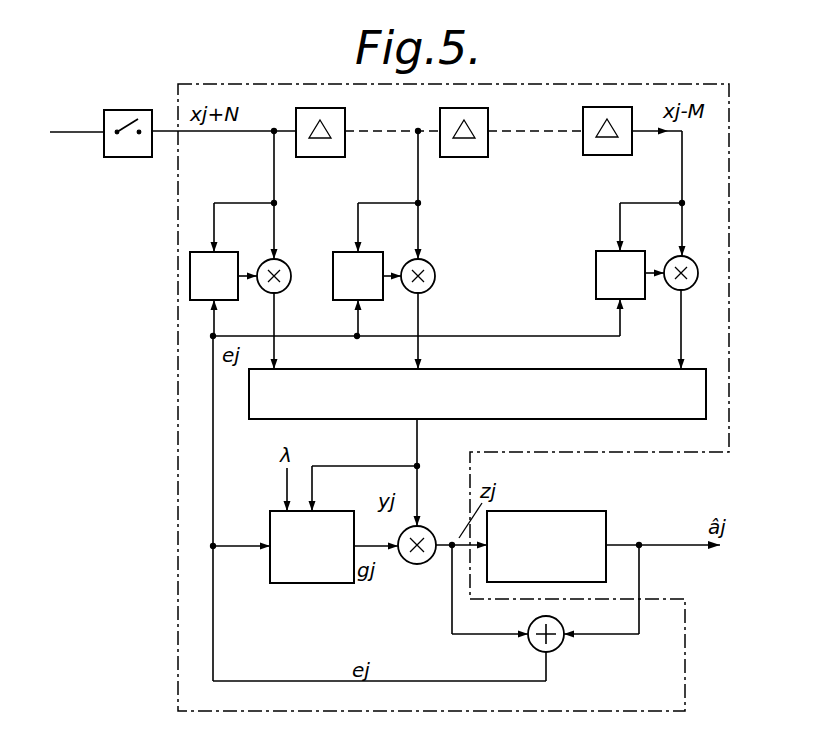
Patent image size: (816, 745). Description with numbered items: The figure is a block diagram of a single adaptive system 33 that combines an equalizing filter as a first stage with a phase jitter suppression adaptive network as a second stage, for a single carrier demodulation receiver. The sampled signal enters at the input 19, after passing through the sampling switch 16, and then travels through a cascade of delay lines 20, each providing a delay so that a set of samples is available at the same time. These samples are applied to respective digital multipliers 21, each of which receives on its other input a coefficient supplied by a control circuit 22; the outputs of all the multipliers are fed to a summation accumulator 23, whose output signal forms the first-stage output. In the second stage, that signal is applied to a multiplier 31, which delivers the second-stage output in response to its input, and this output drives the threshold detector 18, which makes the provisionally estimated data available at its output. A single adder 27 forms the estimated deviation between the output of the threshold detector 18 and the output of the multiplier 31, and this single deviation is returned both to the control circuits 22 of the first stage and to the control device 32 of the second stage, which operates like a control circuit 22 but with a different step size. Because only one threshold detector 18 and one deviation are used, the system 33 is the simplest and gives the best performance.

The sampling switch 16 is at (121, 108).
The input 19 is at (64, 132).
The delay line 20 is at (345, 113).
The digital multiplier 21 is at (284, 260).
The control circuit 22 is at (190, 278).
The summation accumulator 23 is at (630, 368).
The adder 27 is at (559, 647).
The multiplier 31 is at (410, 561).
The control device 32 is at (312, 584).
The threshold detector 18 is at (601, 511).
The adaptive system 33 is at (729, 171).